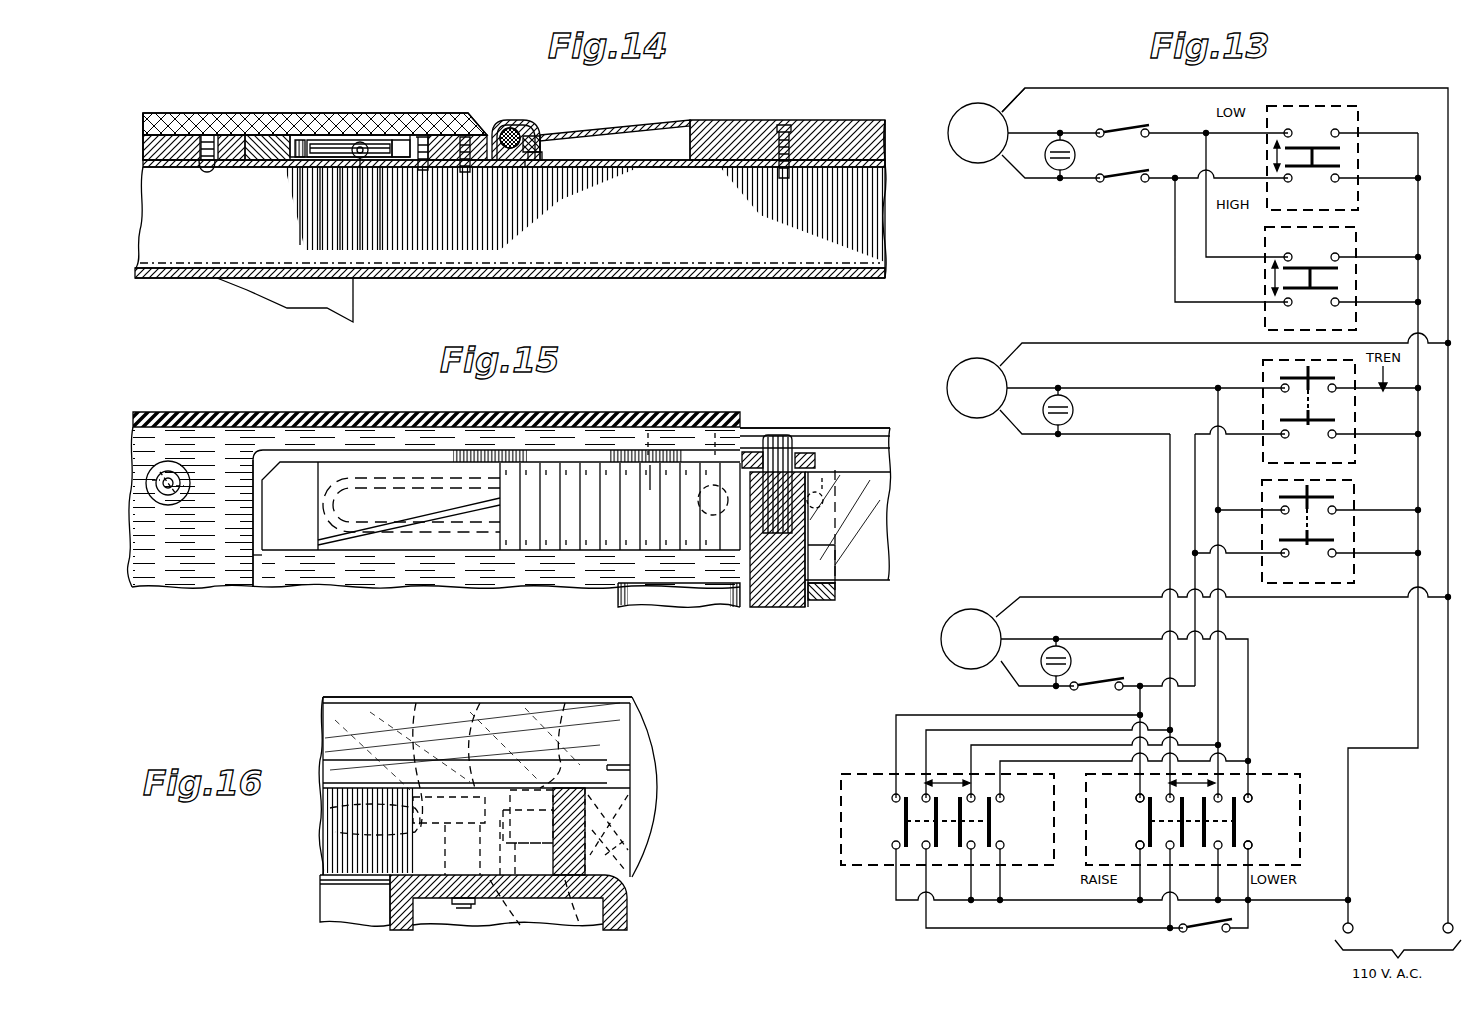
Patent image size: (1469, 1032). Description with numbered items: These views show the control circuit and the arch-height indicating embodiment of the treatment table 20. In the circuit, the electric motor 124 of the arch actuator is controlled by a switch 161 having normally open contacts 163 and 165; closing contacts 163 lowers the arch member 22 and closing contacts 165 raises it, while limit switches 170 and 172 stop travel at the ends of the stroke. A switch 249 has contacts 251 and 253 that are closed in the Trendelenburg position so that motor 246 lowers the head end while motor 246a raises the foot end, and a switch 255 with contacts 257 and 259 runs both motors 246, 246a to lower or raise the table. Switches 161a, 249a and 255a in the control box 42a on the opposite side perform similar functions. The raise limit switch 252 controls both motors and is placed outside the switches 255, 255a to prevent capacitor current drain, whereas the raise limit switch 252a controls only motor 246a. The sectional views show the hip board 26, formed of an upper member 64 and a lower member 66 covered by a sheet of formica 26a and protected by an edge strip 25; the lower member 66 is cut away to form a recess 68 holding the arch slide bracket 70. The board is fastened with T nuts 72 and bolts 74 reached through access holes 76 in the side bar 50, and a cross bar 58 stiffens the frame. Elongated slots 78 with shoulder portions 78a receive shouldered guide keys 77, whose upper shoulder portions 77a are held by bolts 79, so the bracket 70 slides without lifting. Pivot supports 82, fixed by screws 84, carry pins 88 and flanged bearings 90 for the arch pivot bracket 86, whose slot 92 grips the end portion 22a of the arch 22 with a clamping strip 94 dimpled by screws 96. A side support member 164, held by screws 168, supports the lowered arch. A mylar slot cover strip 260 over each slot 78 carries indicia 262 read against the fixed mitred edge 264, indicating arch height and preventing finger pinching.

In FIG. 14, the table 20 is at (778, 70).
In FIG. 14, the arch member 22 is at (680, 122).
In FIG. 15, the arch member 22 is at (890, 562).
In FIG. 15, the end portion 22a is at (822, 600).
In FIG. 15, the edge strip 25 is at (140, 412).
In FIG. 16, the edge strip 25 is at (650, 748).
In FIG. 14, the hip board 26 is at (185, 113).
In FIG. 15, the hip board 26 is at (175, 580).
In FIG. 16, the hip board 26 is at (350, 692).
In FIG. 14, the sheet of formica 26a is at (222, 113).
In FIG. 16, the sheet of formica 26a is at (620, 697).
In FIG. 14, the control box 42a is at (362, 305).
In FIG. 14, the side bar 50 is at (845, 278).
In FIG. 15, the side bar 50 is at (893, 483).
In FIG. 16, the side bar 50 is at (622, 912).
In FIG. 15, the cross bar 58 is at (720, 600).
In FIG. 16, the cross bar 58 is at (340, 898).
In FIG. 14, the upper member 64 is at (143, 125).
In FIG. 16, the upper member 64 is at (323, 735).
In FIG. 14, the lower member 66 is at (143, 150).
In FIG. 15, the lower member 66 is at (215, 570).
In FIG. 16, the lower member 66 is at (615, 865).
In FIG. 14, the recess 68 is at (232, 135).
In FIG. 15, the recess 68 is at (258, 455).
In FIG. 16, the recess 68 is at (600, 828).
In FIG. 14, the arch slide bracket 70 is at (268, 160).
In FIG. 15, the arch slide bracket 70 is at (528, 570).
In FIG. 16, the arch slide bracket 70 is at (345, 822).
In FIG. 14, the T nut 72 is at (200, 150).
In FIG. 15, the T nut 72 is at (162, 460).
In FIG. 14, the bolt 74 is at (207, 172).
In FIG. 15, the bolt 74 is at (172, 470).
In FIG. 14, the access hole 76 is at (208, 278).
In FIG. 14, the guide key 77 is at (440, 135).
In FIG. 15, the guide key 77 is at (650, 462).
In FIG. 16, the guide key 77 is at (418, 788).
In FIG. 14, the upper shoulder portion 77a is at (413, 162).
In FIG. 16, the upper shoulder portion 77a is at (350, 843).
In FIG. 14, the elongated slot 78 is at (325, 157).
In FIG. 15, the elongated slot 78 is at (372, 562).
In FIG. 16, the elongated slot 78 is at (520, 912).
In FIG. 14, the shoulder portion 78a is at (300, 135).
In FIG. 15, the shoulder portion 78a is at (340, 560).
In FIG. 16, the shoulder portion 78a is at (380, 798).
In FIG. 14, the bolt 79 is at (463, 170).
In FIG. 16, the bolt 79 is at (460, 905).
In FIG. 14, the pivot support 82 is at (495, 125).
In FIG. 15, the pivot support 82 is at (815, 452).
In FIG. 16, the pivot support 82 is at (565, 798).
In FIG. 14, the screw 84 is at (365, 168).
In FIG. 15, the screw 84 is at (478, 430).
In FIG. 16, the screw 84 is at (580, 912).
In FIG. 14, the arch pivot bracket 86 is at (532, 135).
In FIG. 15, the arch pivot bracket 86 is at (775, 603).
In FIG. 14, the pin 88 is at (515, 130).
In FIG. 15, the pin 88 is at (776, 437).
In FIG. 15, the flanged bearing 90 is at (793, 450).
In FIG. 15, the slot 92 is at (806, 600).
In FIG. 14, the clamping strip 94 is at (540, 150).
In FIG. 15, the clamping strip 94 is at (835, 583).
In FIG. 14, the screw 96 is at (528, 165).
In FIG. 15, the screw 96 is at (836, 478).
In FIG. 13, the electric motor 124 is at (985, 112).
In FIG. 13, the switch 161 is at (1358, 150).
In FIG. 13, the switch 161a is at (1356, 278).
In FIG. 13, the contact 163 is at (1335, 128).
In FIG. 14, the side support member 164 is at (885, 120).
In FIG. 13, the contact 165 is at (1333, 195).
In FIG. 14, the screw 168 is at (783, 175).
In FIG. 13, the limit switch 170 is at (1123, 185).
In FIG. 13, the limit switch 172 is at (1125, 118).
In FIG. 13, the motor 246 is at (980, 362).
In FIG. 13, the motor 246a is at (975, 612).
In FIG. 13, the switch 249 is at (1355, 448).
In FIG. 13, the switch 249a is at (1354, 530).
In FIG. 13, the contact 251 is at (1280, 386).
In FIG. 13, the raise limit switch 252 is at (1205, 935).
In FIG. 13, the raise limit switch 252a is at (1095, 688).
In FIG. 13, the contact 253 is at (1330, 450).
In FIG. 13, the switch 255 is at (1292, 758).
In FIG. 13, the switch 255a is at (873, 772).
In FIG. 13, the contact 257 is at (1258, 810).
In FIG. 13, the contact 259 is at (1136, 843).
In FIG. 14, the slot cover strip 260 is at (362, 142).
In FIG. 15, the slot cover strip 260 is at (482, 560).
In FIG. 16, the slot cover strip 260 is at (520, 788).
In FIG. 15, the indicia 262 is at (582, 465).
In FIG. 14, the mitred edge 264 is at (468, 130).
In FIG. 16, the mitred edge 264 is at (470, 750).